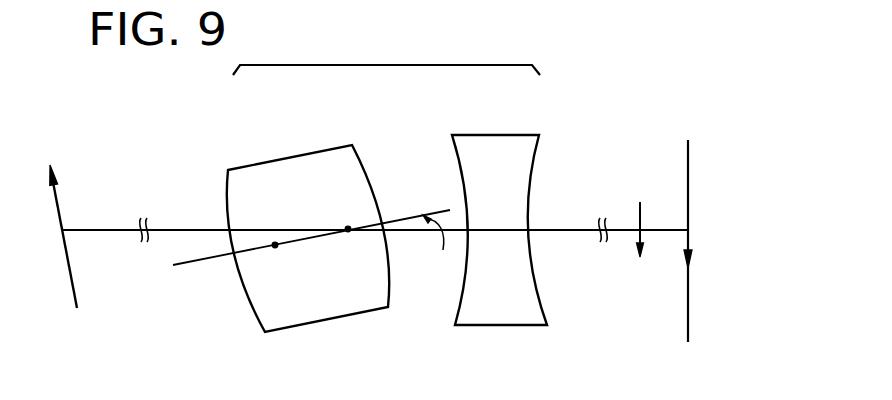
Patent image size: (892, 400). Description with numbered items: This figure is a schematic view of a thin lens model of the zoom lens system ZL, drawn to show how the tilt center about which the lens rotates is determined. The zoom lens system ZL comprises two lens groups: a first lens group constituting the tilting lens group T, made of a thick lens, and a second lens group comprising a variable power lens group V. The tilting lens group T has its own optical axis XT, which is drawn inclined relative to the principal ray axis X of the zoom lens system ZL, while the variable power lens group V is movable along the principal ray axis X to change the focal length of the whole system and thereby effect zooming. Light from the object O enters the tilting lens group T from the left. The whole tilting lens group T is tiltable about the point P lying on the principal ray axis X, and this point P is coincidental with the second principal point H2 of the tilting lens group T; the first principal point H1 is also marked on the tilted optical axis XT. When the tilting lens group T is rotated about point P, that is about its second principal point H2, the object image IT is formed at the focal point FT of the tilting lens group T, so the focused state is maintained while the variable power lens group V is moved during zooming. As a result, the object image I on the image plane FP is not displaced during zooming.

The zoom lens system ZL is at (386, 54).
The object O is at (72, 288).
The tilting lens group T is at (320, 307).
The optical axis of the tilting lens group XT is at (402, 217).
The first principal point H1 is at (280, 260).
The second principal point H2 is at (350, 245).
The point P is at (352, 278).
The variable power lens group V is at (505, 305).
The principal ray axis X is at (558, 232).
The object image IT is at (637, 215).
The focal point FT is at (642, 230).
The object image on the image plane I is at (690, 238).
The image plane FP is at (690, 338).